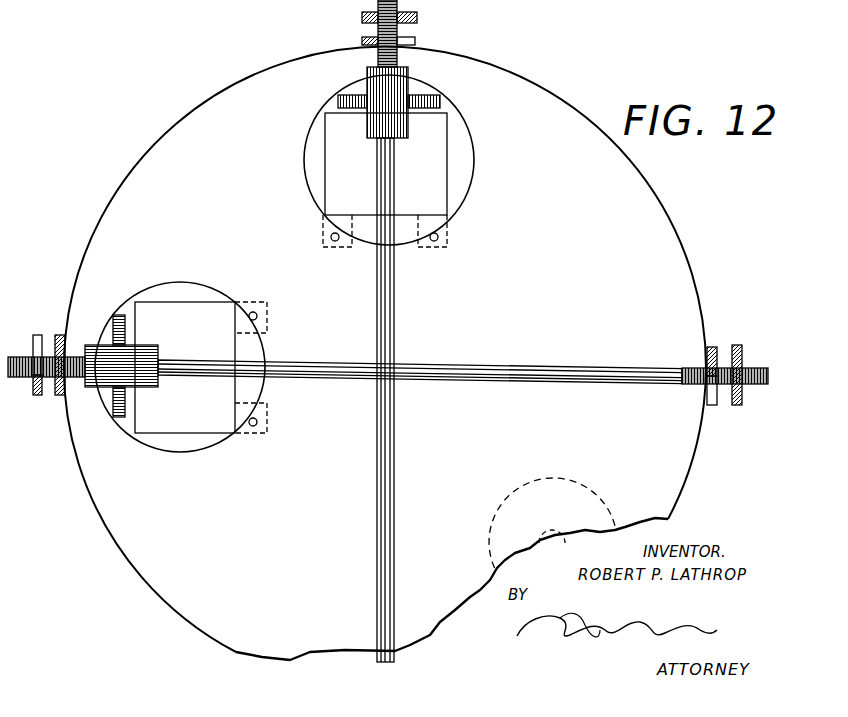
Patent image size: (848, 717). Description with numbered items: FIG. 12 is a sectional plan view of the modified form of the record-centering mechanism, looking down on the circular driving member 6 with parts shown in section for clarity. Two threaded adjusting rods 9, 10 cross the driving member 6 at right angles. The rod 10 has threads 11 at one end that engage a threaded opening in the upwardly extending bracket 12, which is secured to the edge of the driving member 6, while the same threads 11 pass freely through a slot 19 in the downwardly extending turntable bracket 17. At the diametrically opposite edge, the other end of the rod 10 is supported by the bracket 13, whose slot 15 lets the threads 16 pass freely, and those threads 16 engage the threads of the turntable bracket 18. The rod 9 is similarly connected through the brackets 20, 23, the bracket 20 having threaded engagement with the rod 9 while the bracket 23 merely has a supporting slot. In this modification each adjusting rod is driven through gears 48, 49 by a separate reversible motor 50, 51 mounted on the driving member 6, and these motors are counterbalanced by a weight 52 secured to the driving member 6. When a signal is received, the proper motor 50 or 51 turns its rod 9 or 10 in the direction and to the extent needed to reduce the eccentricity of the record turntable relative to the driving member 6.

The driving member 6 is at (155, 142).
The rod 9 is at (393, 300).
The rod 10 is at (503, 368).
The threads 11 is at (76, 378).
The bracket 12 is at (58, 393).
The bracket 13 is at (712, 346).
The slot 15 is at (708, 392).
The threads 16 is at (690, 366).
The bracket 17 is at (37, 392).
The bracket 18 is at (737, 345).
The slot 19 is at (37, 338).
The bracket 20 is at (413, 17).
The bracket 23 is at (362, 42).
The gear 48 is at (438, 98).
The gear 49 is at (408, 78).
The reversible motor 50 is at (186, 302).
The reversible motor 51 is at (432, 141).
The weight 52 is at (583, 483).